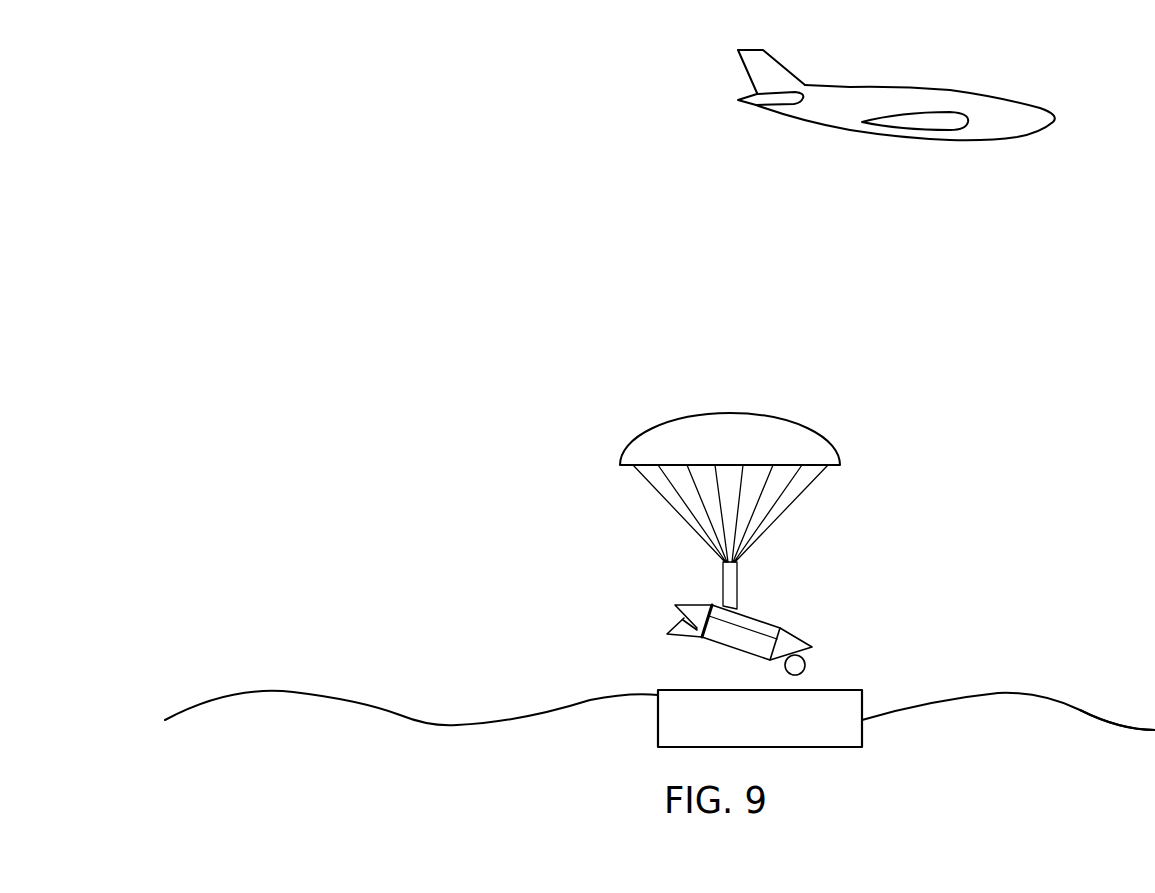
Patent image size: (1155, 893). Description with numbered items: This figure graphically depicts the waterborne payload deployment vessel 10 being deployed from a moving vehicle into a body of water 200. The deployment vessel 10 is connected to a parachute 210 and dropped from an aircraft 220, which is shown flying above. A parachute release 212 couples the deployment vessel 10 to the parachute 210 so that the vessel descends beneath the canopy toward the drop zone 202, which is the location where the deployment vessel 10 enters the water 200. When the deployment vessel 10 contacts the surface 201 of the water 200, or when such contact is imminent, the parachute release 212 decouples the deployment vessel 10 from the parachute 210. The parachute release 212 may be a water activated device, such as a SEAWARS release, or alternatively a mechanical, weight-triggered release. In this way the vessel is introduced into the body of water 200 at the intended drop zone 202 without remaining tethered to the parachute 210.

The aircraft 220 is at (905, 88).
The parachute 210 is at (728, 413).
The parachute release 212 is at (737, 590).
The deployment vessel 10 is at (798, 630).
The body of water 200 is at (995, 713).
The surface 201 is at (1120, 723).
The drop zone 202 is at (857, 688).